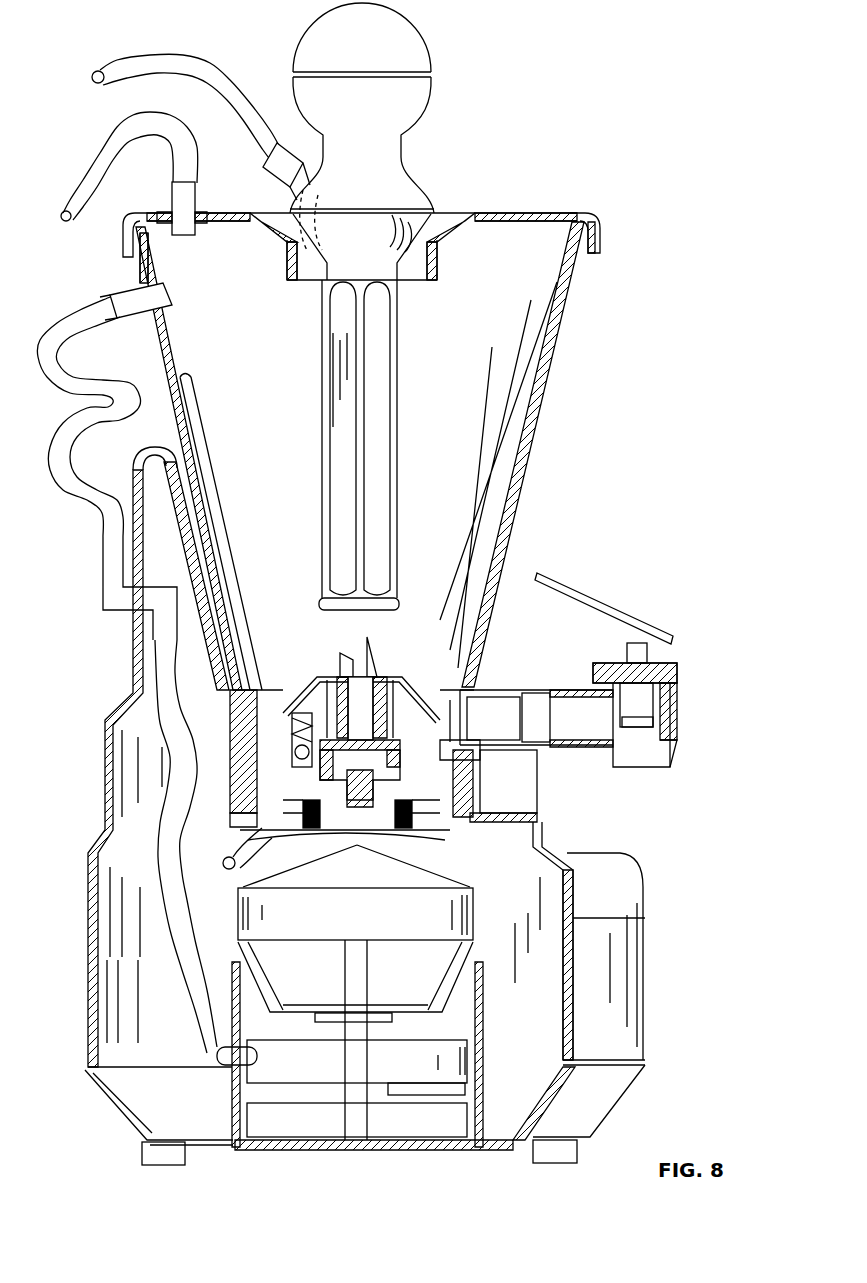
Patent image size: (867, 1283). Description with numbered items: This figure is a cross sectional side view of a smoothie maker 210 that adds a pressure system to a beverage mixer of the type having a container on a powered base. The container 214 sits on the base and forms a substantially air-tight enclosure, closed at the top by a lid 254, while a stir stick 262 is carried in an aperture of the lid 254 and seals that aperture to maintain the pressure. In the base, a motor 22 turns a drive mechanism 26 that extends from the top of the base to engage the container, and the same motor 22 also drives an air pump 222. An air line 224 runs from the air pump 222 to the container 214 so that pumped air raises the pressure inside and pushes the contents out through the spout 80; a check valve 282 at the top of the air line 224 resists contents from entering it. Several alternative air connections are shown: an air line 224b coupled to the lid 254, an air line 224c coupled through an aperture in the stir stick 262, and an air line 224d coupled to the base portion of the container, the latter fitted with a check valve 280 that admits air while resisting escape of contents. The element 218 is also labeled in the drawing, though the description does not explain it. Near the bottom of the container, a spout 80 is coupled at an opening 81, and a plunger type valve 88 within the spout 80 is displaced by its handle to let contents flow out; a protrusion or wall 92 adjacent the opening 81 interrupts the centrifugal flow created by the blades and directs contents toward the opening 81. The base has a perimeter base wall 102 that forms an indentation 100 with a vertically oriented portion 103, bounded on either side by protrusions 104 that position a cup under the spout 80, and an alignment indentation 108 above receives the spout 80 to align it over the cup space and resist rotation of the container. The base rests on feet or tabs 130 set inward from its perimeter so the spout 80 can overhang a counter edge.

The motor 22 is at (355, 992).
The drive mechanism 26 is at (455, 852).
The spout 80 is at (672, 628).
The opening 81 is at (477, 713).
The plunger type valve 88 is at (653, 723).
The protrusion or wall 92 is at (450, 717).
The indentation 100 is at (593, 987).
The perimeter base wall 102 is at (77, 977).
The vertically oriented portion 103 is at (573, 918).
The protrusions 104 is at (648, 953).
The alignment indentation 108 is at (513, 780).
The feet or tabs 130 is at (142, 1158).
The smoothie maker 210 is at (105, 670).
The container 214 is at (555, 468).
The housing wall 218 is at (95, 815).
The air pump 222 is at (342, 1088).
The air line 224 is at (93, 297).
The air line 224b is at (107, 127).
The air line 224c is at (192, 53).
The air line 224d is at (267, 852).
The lid 254 is at (514, 200).
The stir stick 262 is at (440, 40).
The check valve 280 is at (306, 712).
The check valve 282 is at (167, 283).